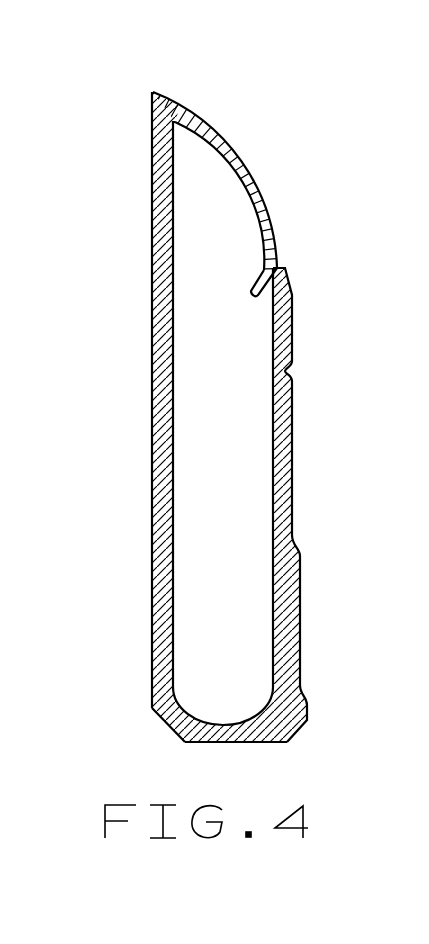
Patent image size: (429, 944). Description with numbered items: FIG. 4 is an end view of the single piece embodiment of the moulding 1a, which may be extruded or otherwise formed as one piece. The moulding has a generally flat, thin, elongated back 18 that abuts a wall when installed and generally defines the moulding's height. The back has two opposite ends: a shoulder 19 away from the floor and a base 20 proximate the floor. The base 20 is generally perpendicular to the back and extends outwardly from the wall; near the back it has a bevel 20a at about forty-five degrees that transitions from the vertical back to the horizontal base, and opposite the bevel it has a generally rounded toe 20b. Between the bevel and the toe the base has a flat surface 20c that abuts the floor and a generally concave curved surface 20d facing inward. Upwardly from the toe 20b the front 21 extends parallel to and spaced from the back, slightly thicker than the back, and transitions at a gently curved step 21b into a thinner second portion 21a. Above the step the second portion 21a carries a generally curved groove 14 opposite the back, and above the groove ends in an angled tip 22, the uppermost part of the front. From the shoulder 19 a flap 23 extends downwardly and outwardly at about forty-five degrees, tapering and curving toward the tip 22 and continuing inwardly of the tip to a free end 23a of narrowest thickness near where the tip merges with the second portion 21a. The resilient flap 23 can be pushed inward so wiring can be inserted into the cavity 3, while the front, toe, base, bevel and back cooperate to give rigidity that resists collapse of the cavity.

The sealing profile 1a is at (245, 130).
The cavity 3 is at (223, 363).
The groove 14 is at (288, 368).
The back 18 is at (160, 477).
The shoulder 19 is at (152, 108).
The base 20 is at (193, 743).
The bevel 20a is at (152, 710).
The toe 20b is at (307, 717).
The flat surface 20c is at (217, 743).
The curved surface 20d is at (221, 724).
The front 21 is at (300, 608).
The second portion 21a is at (292, 432).
The step 21b is at (293, 540).
The tip 22 is at (287, 283).
The flap 23 is at (260, 180).
The free end 23a is at (255, 283).